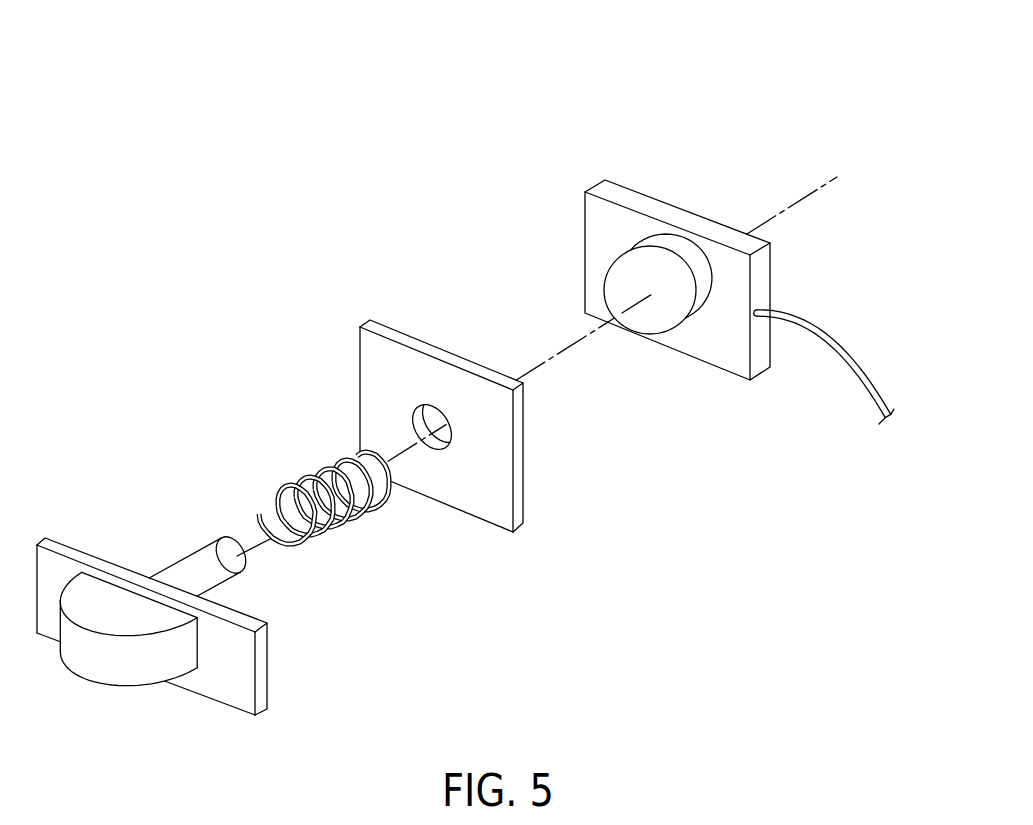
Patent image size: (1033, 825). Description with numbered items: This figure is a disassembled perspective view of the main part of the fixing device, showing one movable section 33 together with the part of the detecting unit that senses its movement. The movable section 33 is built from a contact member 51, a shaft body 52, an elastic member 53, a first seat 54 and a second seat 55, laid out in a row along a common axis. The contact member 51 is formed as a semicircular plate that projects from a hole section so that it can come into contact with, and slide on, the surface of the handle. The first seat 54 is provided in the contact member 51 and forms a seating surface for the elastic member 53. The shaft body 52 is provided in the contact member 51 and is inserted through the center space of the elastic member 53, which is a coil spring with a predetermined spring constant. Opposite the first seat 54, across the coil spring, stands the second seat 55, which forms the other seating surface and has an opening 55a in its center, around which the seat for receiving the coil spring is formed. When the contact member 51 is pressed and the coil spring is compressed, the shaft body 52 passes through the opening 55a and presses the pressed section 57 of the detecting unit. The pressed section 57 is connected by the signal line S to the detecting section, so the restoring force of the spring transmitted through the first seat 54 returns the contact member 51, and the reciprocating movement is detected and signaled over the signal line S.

The movable section 33 is at (330, 610).
The contact member 51 is at (113, 678).
The shaft body 52 is at (180, 560).
The elastic member 53 is at (288, 481).
The first seat 54 is at (53, 545).
The second seat 55 is at (372, 326).
The opening 55a is at (447, 412).
The pressed section 57 is at (625, 193).
The signal line S is at (852, 341).